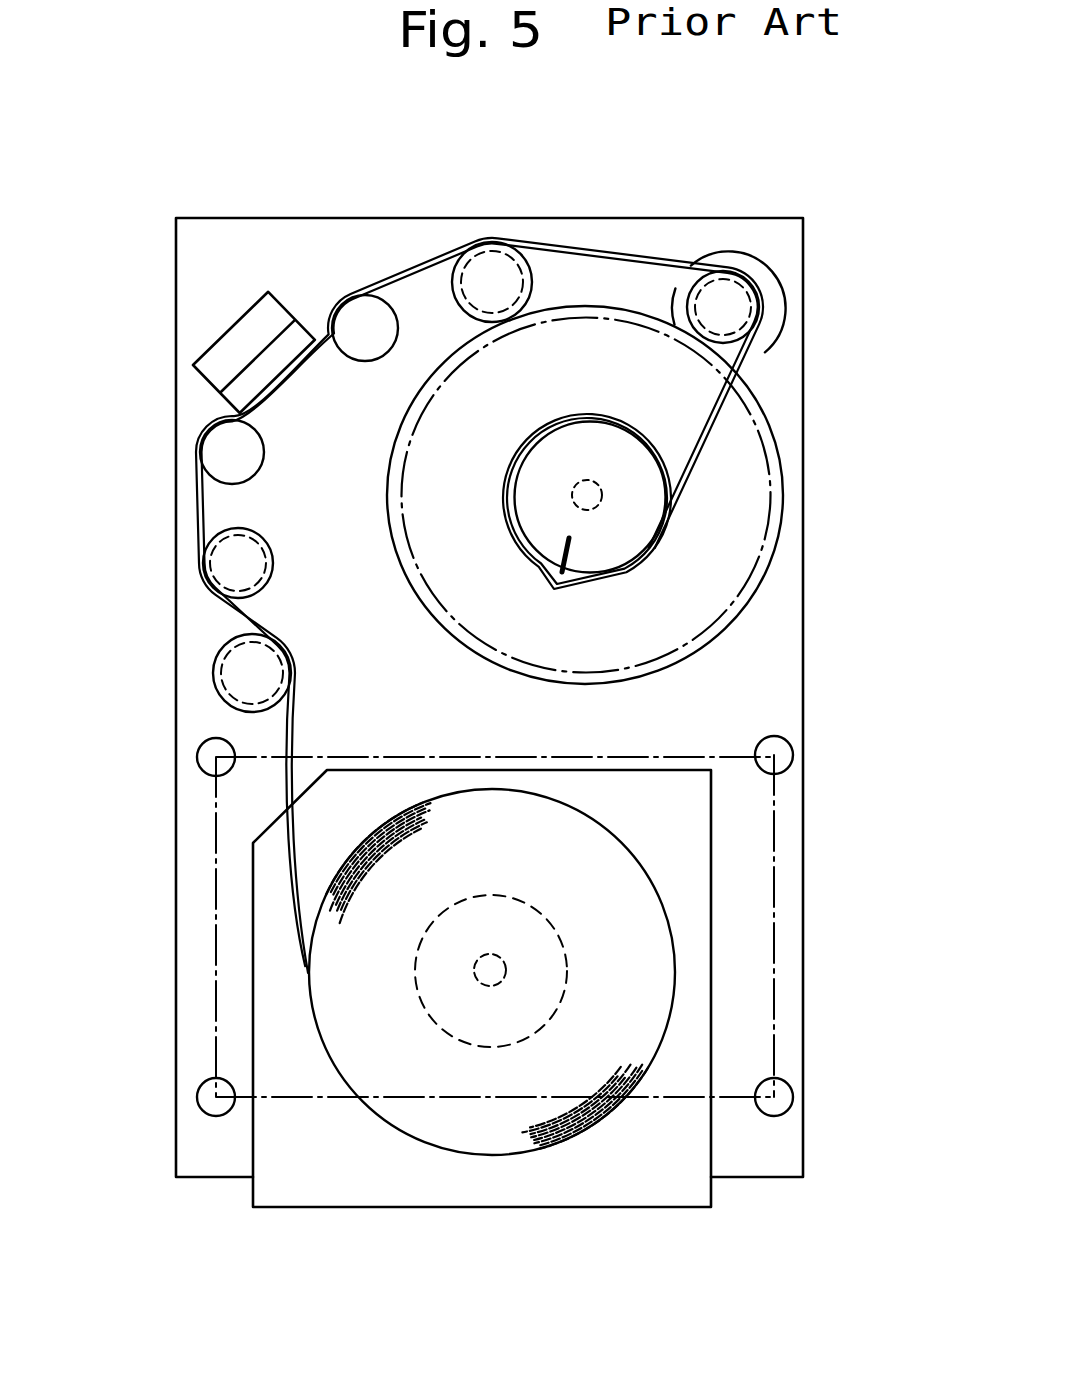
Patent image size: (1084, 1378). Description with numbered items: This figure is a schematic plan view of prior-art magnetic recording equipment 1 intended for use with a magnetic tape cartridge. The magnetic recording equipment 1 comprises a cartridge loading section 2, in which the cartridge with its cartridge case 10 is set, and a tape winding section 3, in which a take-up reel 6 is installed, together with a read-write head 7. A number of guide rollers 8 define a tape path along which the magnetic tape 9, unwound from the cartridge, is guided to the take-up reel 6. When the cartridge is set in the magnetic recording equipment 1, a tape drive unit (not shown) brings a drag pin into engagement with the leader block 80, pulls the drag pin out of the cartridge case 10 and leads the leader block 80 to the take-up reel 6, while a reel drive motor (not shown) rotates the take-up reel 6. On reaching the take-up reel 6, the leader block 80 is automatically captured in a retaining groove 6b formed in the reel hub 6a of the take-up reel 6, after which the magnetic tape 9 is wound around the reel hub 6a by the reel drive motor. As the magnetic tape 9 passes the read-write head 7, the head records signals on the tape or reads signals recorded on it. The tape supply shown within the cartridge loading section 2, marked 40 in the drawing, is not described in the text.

The magnetic recording equipment 1 is at (172, 1009).
The cartridge loading section 2 is at (780, 970).
The tape winding section 3 is at (749, 447).
The take-up reel 6 is at (790, 555).
The reel hub 6a is at (640, 521).
The retaining groove 6b is at (580, 542).
The read-write head 7 is at (241, 302).
The guide rollers 8 is at (370, 318).
The magnetic tape 9 is at (288, 877).
The cartridge case 10 is at (622, 1218).
The roll paper 40 is at (667, 903).
The leader block 80 is at (595, 589).